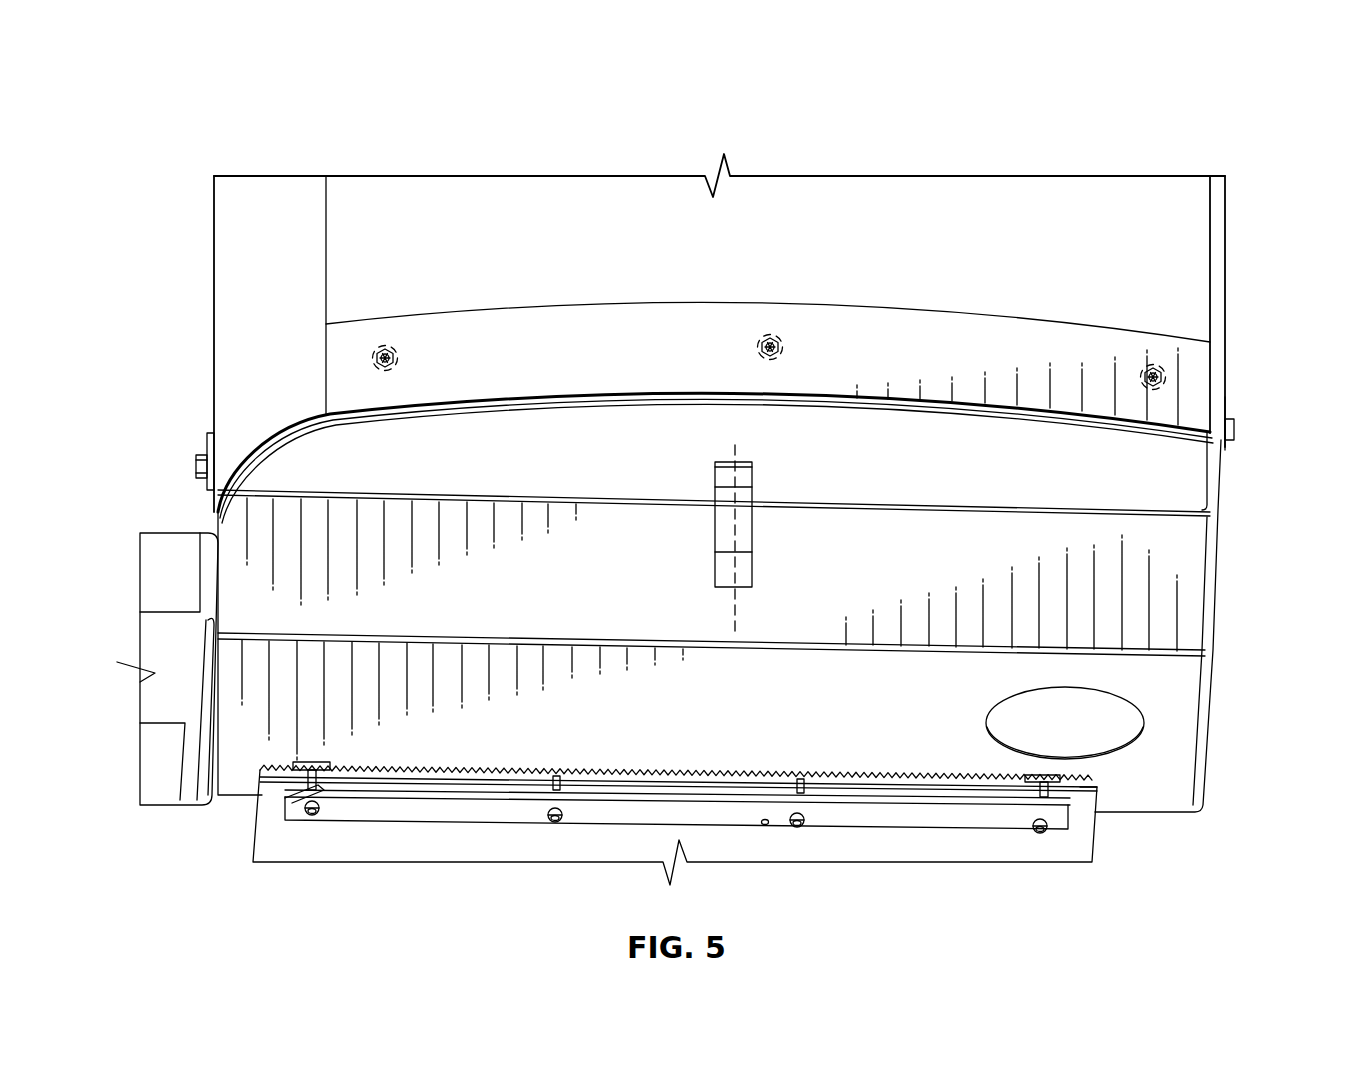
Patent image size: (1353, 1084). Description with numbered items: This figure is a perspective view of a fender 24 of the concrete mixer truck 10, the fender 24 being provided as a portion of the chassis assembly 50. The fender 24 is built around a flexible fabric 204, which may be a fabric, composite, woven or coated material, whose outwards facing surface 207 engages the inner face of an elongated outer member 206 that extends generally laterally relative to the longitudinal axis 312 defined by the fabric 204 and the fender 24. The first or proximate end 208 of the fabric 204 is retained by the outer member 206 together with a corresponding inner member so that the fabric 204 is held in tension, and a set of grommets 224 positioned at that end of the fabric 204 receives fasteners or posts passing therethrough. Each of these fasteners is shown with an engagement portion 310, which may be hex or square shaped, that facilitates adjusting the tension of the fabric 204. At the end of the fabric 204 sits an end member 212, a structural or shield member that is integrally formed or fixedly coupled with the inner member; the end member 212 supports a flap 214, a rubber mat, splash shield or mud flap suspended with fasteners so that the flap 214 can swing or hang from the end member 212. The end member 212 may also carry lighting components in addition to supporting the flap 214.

The vehicle 10 is at (167, 228).
The fender 24 is at (925, 147).
The chassis assembly 50 is at (820, 83).
The fabric 204 is at (222, 305).
The outer member 206 is at (605, 318).
The outwards facing surface 207 is at (443, 190).
The first end 208 is at (1185, 463).
The end member 212 is at (1218, 588).
The flap 214 is at (1085, 845).
The grommets 224 is at (386, 348).
The engagement portion 310 is at (394, 356).
The longitudinal axis 312 is at (735, 605).